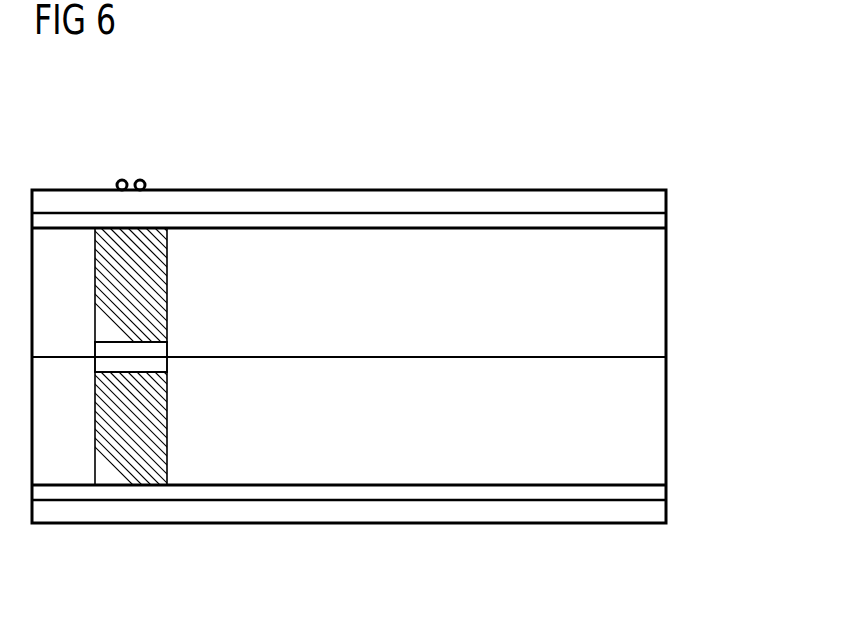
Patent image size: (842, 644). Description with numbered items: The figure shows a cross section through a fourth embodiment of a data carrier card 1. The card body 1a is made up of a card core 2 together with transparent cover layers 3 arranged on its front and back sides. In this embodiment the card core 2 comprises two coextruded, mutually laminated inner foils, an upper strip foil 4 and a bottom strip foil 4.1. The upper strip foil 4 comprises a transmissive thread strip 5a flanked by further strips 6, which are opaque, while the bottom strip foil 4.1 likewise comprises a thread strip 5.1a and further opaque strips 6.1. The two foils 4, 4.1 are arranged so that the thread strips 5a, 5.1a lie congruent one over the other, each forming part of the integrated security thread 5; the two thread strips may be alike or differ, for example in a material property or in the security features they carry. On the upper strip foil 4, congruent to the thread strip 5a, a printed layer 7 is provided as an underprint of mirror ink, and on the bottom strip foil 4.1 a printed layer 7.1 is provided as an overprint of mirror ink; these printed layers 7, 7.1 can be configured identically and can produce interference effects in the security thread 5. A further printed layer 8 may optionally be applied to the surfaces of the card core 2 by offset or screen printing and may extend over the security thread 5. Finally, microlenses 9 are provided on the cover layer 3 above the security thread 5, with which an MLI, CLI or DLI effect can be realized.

The data carrier card 1 is at (80, 116).
The card body 1a is at (666, 190).
The card core 2 is at (666, 213).
The cover layer 3 is at (588, 199).
The upper strip foil 4 is at (674, 228).
The bottom strip foil 4.1 is at (674, 359).
The security thread 5 is at (95, 485).
The thread strip 5a is at (158, 273).
The thread strip 5.1a is at (158, 432).
The further strips 6 is at (60, 241).
The further strips 6.1 is at (65, 472).
The printed layer 7 is at (165, 349).
The printed layer 7.1 is at (165, 365).
The further printed layer 8 is at (356, 221).
The microlenses 9 is at (122, 182).